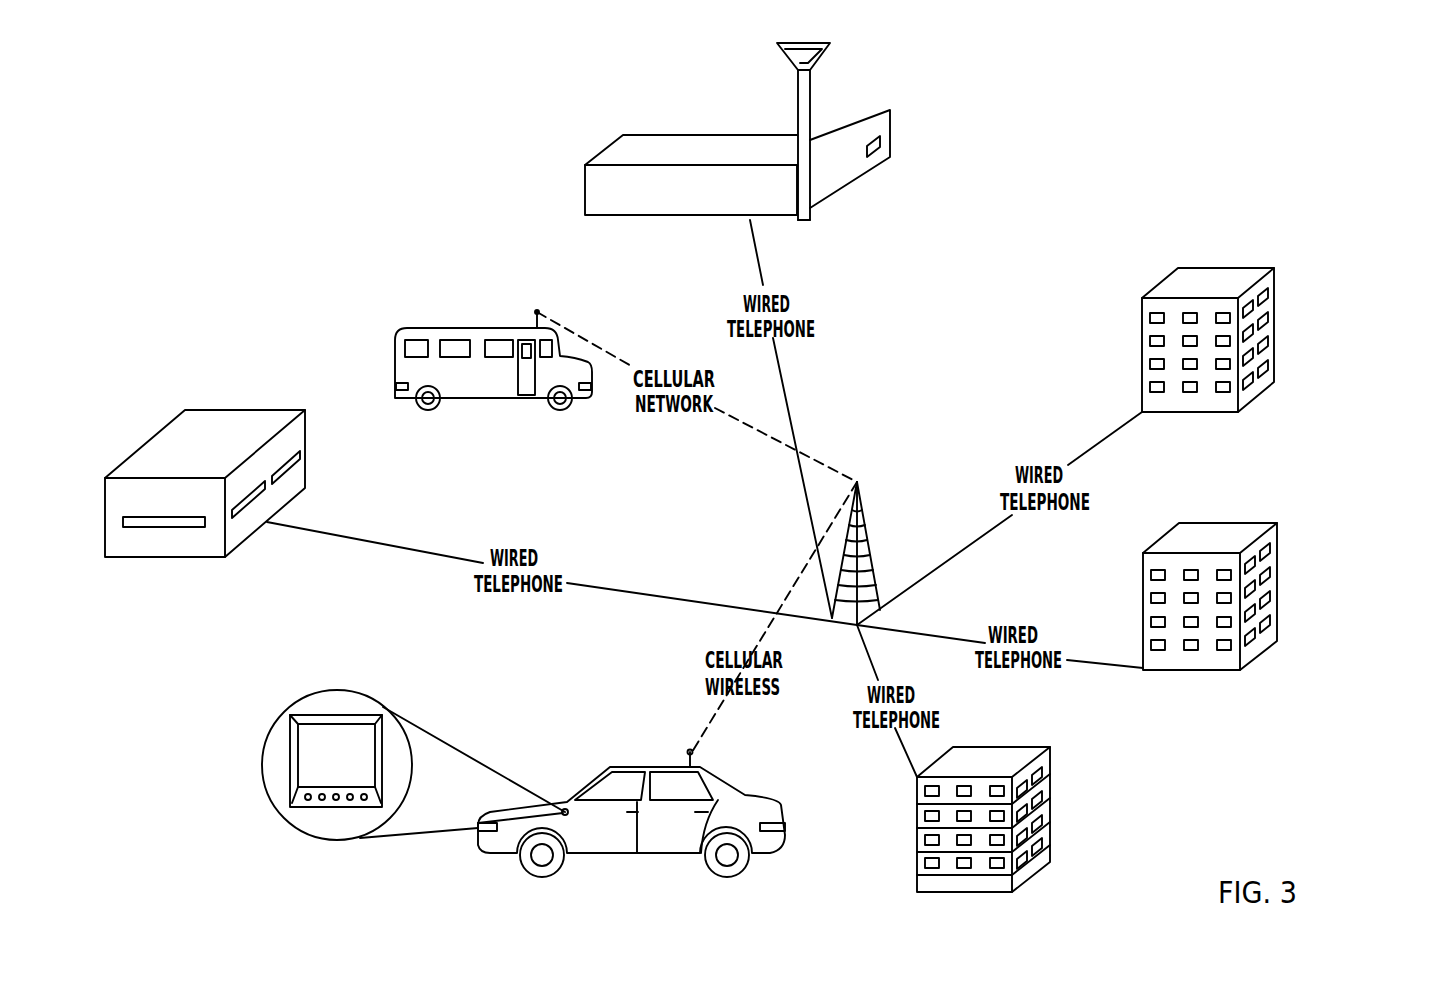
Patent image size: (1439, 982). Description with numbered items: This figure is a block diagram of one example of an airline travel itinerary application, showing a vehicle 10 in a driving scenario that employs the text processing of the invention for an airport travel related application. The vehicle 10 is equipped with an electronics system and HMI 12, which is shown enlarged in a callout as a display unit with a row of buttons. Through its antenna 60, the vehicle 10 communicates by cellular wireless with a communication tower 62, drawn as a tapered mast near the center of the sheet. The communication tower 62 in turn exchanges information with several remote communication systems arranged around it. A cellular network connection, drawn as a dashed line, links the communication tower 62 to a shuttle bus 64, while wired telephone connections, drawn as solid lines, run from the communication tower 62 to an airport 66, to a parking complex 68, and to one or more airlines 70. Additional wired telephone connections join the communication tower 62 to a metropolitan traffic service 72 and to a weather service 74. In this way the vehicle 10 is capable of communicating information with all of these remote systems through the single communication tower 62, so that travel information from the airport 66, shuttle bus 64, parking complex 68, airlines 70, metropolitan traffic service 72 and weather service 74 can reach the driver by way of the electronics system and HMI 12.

The vehicle 10 is at (601, 757).
The electronics system and HMI 12 is at (350, 712).
The antenna 60 is at (688, 750).
The communication tower 62 is at (863, 512).
The shuttle bus 64 is at (480, 328).
The airport 66 is at (647, 143).
The parking complex 68 is at (178, 433).
The airlines 70 is at (1232, 270).
The metropolitan traffic service 72 is at (1233, 527).
The weather service 74 is at (1007, 750).